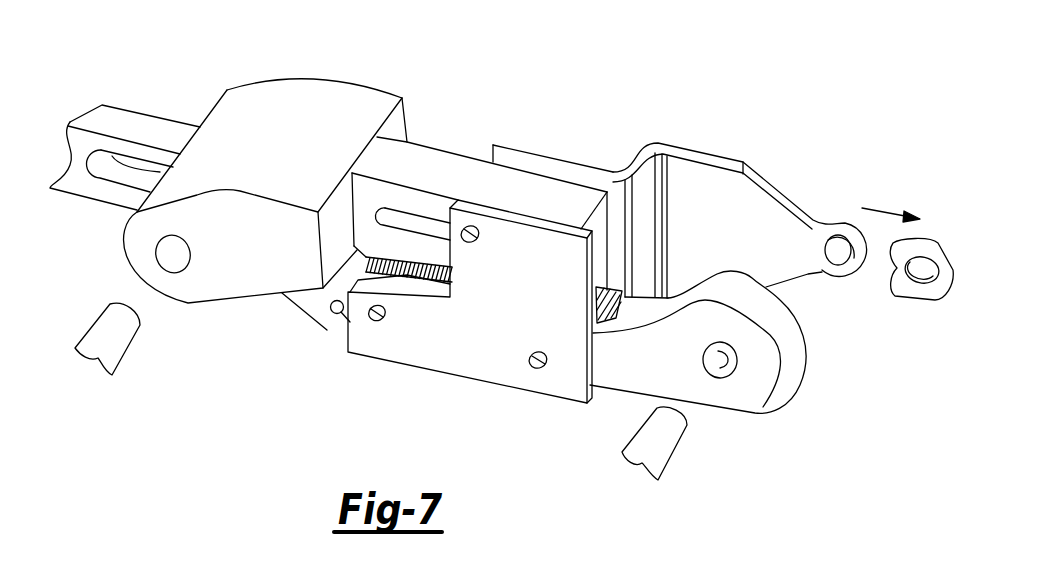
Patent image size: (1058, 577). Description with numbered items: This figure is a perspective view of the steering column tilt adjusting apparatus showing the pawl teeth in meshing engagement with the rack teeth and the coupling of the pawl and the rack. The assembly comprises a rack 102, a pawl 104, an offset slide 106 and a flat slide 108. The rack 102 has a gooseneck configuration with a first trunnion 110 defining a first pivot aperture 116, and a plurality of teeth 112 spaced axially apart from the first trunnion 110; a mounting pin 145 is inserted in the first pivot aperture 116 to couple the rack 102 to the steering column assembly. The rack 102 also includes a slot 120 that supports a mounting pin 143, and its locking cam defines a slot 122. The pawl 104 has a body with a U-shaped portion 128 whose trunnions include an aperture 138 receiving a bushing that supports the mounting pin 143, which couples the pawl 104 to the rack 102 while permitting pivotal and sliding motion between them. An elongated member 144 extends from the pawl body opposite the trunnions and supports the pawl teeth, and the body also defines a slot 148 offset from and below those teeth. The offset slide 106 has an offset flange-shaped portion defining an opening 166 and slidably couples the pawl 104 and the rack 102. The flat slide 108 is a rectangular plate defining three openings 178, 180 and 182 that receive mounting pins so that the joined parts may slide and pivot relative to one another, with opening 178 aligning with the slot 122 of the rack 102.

The rack 102 is at (300, 303).
The pawl 104 is at (437, 150).
The offset slide 106 is at (697, 170).
The flat slide 108 is at (543, 304).
The first trunnion 110 is at (788, 384).
The teeth 112 is at (616, 312).
The first pivot aperture 116 is at (722, 362).
The slot 120 is at (108, 176).
The slot 122 is at (327, 332).
The U-shaped portion 128 is at (207, 112).
The aperture 138 is at (162, 256).
The mounting pin 143 is at (125, 345).
The elongated member 144 is at (540, 185).
The mounting pin 145 is at (672, 440).
The slot 148 is at (392, 220).
The opening 166 is at (833, 264).
The opening 178 is at (375, 322).
The opening 180 is at (538, 370).
The opening 182 is at (468, 243).